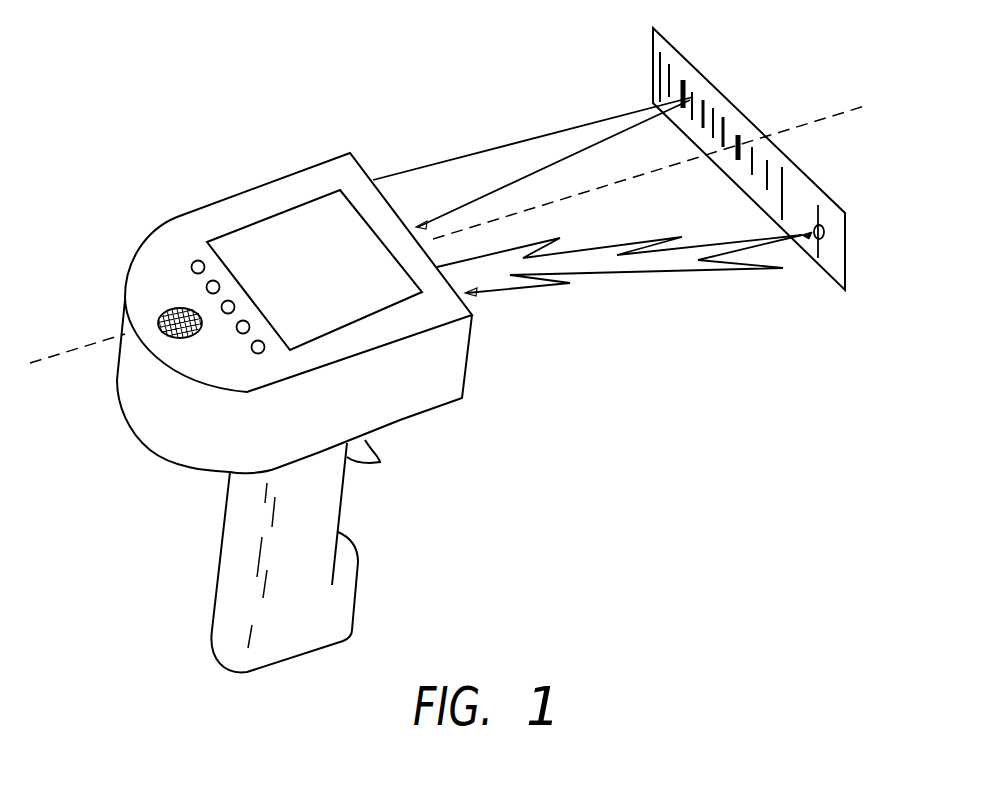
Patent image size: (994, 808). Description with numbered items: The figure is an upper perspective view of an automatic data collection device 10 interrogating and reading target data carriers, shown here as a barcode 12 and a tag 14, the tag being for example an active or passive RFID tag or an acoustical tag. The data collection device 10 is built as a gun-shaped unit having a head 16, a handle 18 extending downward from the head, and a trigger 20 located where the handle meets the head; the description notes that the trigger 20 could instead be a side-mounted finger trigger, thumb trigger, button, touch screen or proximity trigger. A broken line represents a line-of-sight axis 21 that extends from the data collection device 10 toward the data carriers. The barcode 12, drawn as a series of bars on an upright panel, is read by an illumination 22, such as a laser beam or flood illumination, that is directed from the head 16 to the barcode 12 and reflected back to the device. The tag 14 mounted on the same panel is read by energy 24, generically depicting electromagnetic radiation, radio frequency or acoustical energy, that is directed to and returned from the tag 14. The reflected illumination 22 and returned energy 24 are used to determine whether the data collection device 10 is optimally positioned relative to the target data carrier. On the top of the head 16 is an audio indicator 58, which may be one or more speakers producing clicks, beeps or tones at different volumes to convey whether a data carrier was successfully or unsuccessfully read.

The automatic data collection device 10 is at (259, 376).
The barcode 12 is at (722, 123).
The tag 14 is at (823, 225).
The head 16 is at (158, 265).
The handle 18 is at (233, 557).
The trigger 20 is at (363, 465).
The line-of-sight axis 21 is at (840, 116).
The illumination 22 is at (497, 152).
The energy 24 is at (648, 262).
The audio indicator 58 is at (163, 332).